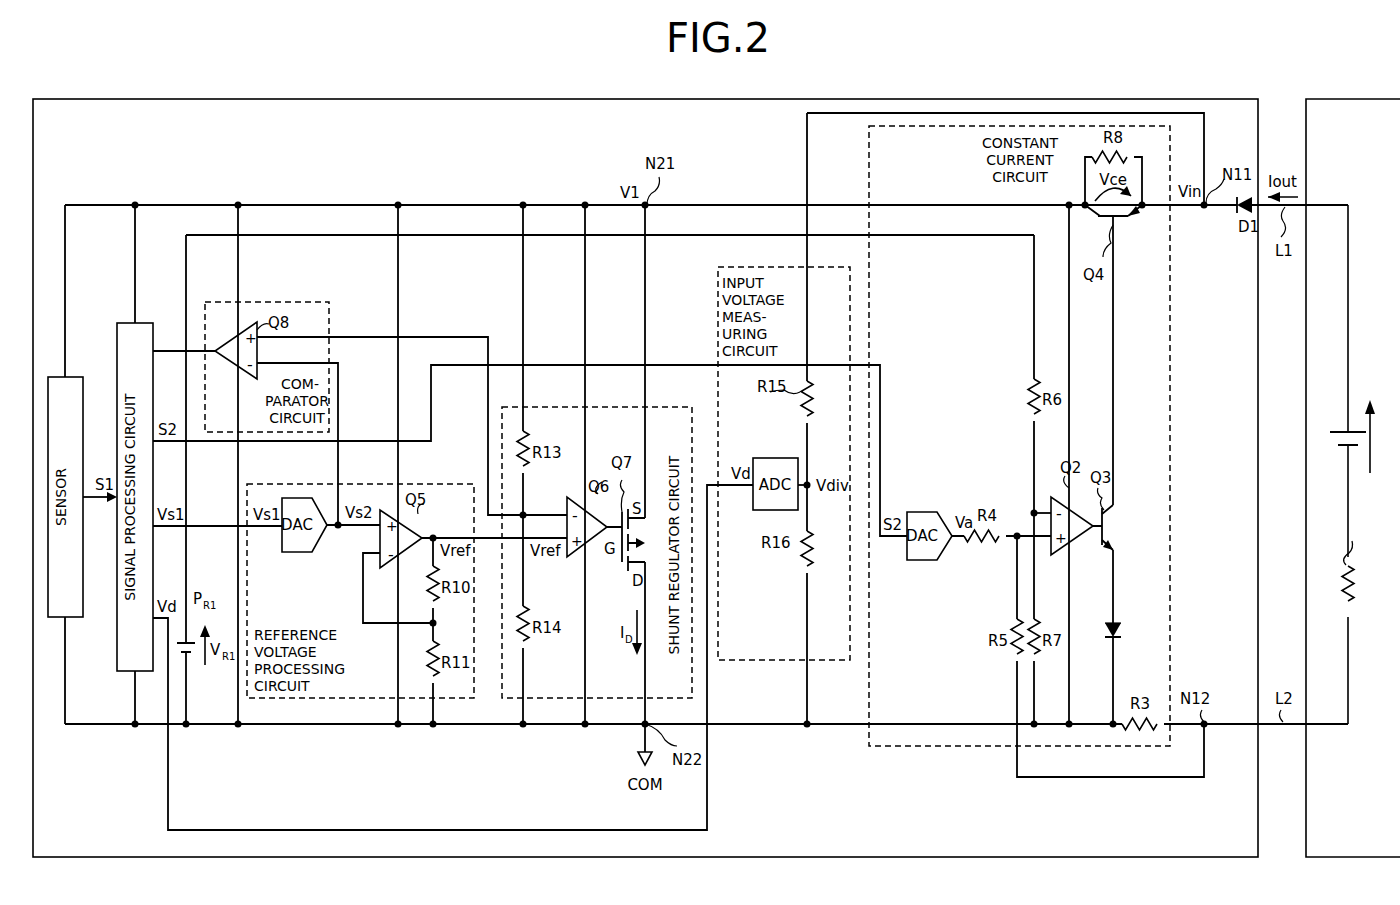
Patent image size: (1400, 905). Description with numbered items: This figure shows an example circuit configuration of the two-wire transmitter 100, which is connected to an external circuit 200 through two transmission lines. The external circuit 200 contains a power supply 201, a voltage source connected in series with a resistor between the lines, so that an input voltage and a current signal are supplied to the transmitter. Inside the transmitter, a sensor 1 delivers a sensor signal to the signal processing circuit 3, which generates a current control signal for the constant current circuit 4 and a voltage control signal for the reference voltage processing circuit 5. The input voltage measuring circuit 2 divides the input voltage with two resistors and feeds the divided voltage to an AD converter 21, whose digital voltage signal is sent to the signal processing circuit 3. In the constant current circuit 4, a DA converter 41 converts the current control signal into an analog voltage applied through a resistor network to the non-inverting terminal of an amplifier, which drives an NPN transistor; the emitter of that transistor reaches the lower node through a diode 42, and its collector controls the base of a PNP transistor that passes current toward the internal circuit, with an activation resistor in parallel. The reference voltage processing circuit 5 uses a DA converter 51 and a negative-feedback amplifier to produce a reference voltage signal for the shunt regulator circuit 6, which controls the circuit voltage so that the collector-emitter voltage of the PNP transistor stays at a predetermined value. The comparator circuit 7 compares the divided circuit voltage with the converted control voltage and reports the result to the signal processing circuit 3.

The two-wire transmitter 100 is at (1200, 99).
The external circuit 200 is at (1355, 99).
The power supply 201 is at (1342, 430).
The sensor 1 is at (68, 377).
The signal processing circuit 3 is at (127, 323).
The comparator circuit 7 is at (305, 302).
The reference voltage processing circuit 5 is at (430, 484).
The DA converter 51 is at (305, 552).
The shunt regulator circuit 6 is at (660, 407).
The input voltage measuring circuit 2 is at (770, 267).
The AD converter 21 is at (770, 458).
The constant current circuit 4 is at (1188, 121).
The DA converter 41 is at (932, 512).
The diode 42 is at (1117, 622).